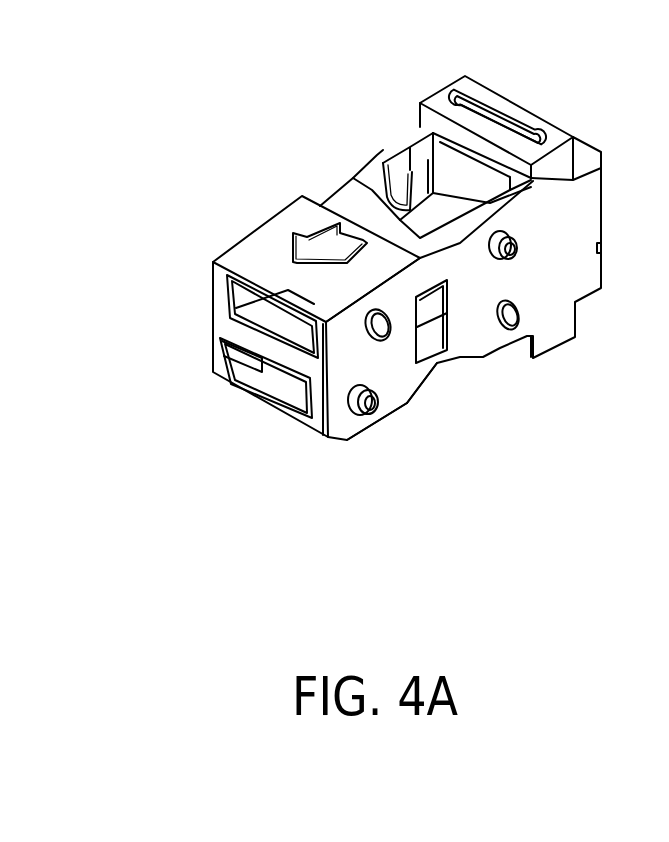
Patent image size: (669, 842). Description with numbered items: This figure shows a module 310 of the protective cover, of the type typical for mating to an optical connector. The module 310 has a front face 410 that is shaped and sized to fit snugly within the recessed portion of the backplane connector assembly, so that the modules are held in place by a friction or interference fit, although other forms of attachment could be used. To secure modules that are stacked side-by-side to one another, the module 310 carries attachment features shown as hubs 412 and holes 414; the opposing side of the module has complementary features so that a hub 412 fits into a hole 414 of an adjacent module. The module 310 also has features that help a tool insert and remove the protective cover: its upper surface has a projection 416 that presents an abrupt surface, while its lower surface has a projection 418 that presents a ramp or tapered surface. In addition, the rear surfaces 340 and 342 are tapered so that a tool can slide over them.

The module 310 is at (259, 439).
The rear surface 340 is at (337, 443).
The rear surface 342 is at (218, 258).
The front face 410 is at (603, 152).
The hub 412 is at (373, 412).
The hole 414 is at (505, 335).
The projection 416 is at (417, 268).
The projection 418 is at (403, 403).